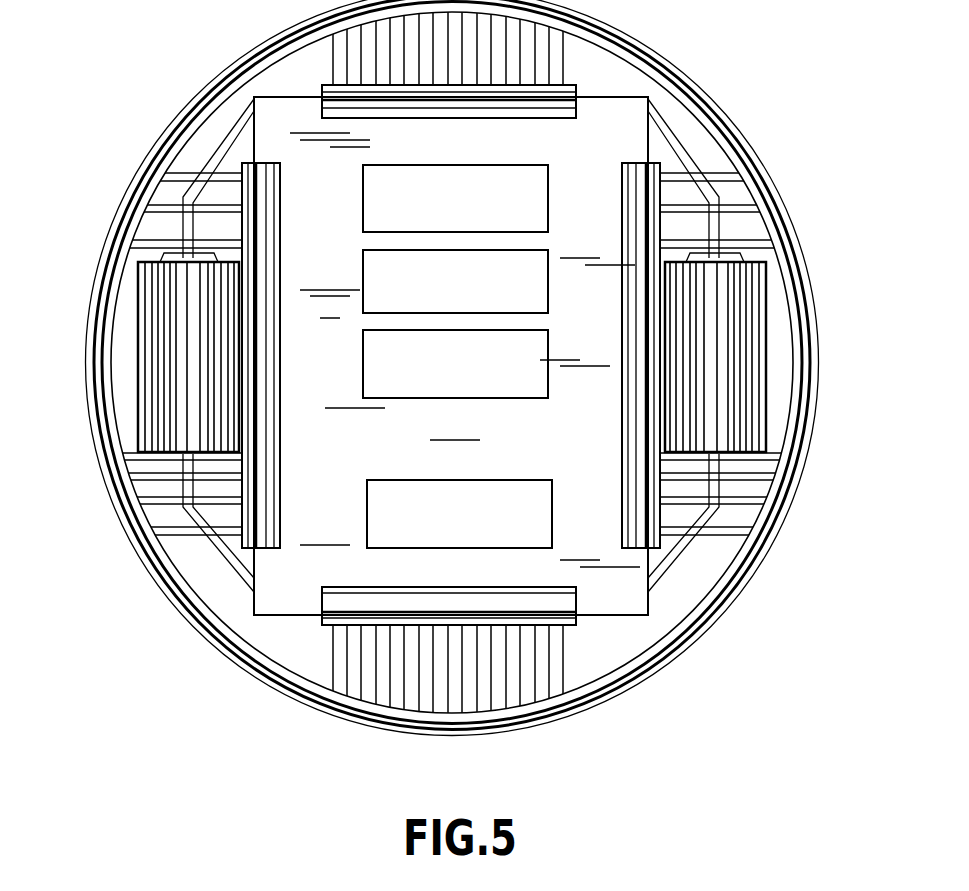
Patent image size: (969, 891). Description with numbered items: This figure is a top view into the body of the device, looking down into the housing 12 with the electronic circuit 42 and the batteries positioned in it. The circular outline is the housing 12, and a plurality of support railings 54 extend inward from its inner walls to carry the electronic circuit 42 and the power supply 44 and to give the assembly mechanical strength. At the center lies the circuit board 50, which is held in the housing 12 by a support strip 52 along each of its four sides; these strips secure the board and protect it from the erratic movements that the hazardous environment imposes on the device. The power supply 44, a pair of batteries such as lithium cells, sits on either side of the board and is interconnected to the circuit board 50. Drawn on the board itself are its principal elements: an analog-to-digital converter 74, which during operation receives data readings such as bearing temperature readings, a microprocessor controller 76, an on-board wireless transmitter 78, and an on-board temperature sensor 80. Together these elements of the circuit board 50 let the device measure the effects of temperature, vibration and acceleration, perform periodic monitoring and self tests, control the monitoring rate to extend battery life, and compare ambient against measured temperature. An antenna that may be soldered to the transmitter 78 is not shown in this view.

The housing 12 is at (198, 96).
The electronic circuit 42 is at (662, 108).
The power supply 44 is at (147, 318).
The circuit board 50 is at (476, 429).
The support strip 52 is at (508, 120).
The support railings 54 is at (563, 58).
The analog-to-digital converter 74 is at (536, 348).
The microprocessor controller 76 is at (546, 284).
The on-board wireless transmitter 78 is at (540, 179).
The on-board temperature sensor 80 is at (529, 521).